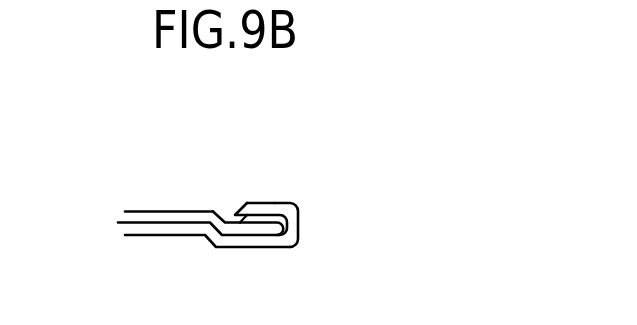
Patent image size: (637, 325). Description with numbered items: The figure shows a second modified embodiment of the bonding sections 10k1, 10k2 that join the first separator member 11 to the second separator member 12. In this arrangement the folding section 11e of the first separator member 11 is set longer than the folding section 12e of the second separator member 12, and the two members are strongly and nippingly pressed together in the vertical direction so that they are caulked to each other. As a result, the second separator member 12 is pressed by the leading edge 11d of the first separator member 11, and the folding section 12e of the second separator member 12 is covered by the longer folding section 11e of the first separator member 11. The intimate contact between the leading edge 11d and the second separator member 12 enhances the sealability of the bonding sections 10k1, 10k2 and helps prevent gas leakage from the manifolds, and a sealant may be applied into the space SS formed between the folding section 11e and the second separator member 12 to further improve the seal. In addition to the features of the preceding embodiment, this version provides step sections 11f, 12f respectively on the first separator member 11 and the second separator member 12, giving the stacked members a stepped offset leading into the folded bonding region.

The bonding section 10k1 is at (326, 131).
The bonding section 10k2 is at (279, 197).
The first separator member 11 is at (126, 236).
The leading edge 11d is at (233, 213).
The folding section 11e is at (246, 203).
The step section 11f is at (216, 247).
The second separator member 12 is at (126, 211).
The folding section 12e is at (272, 205).
The step section 12f is at (222, 228).
The space SS is at (242, 219).